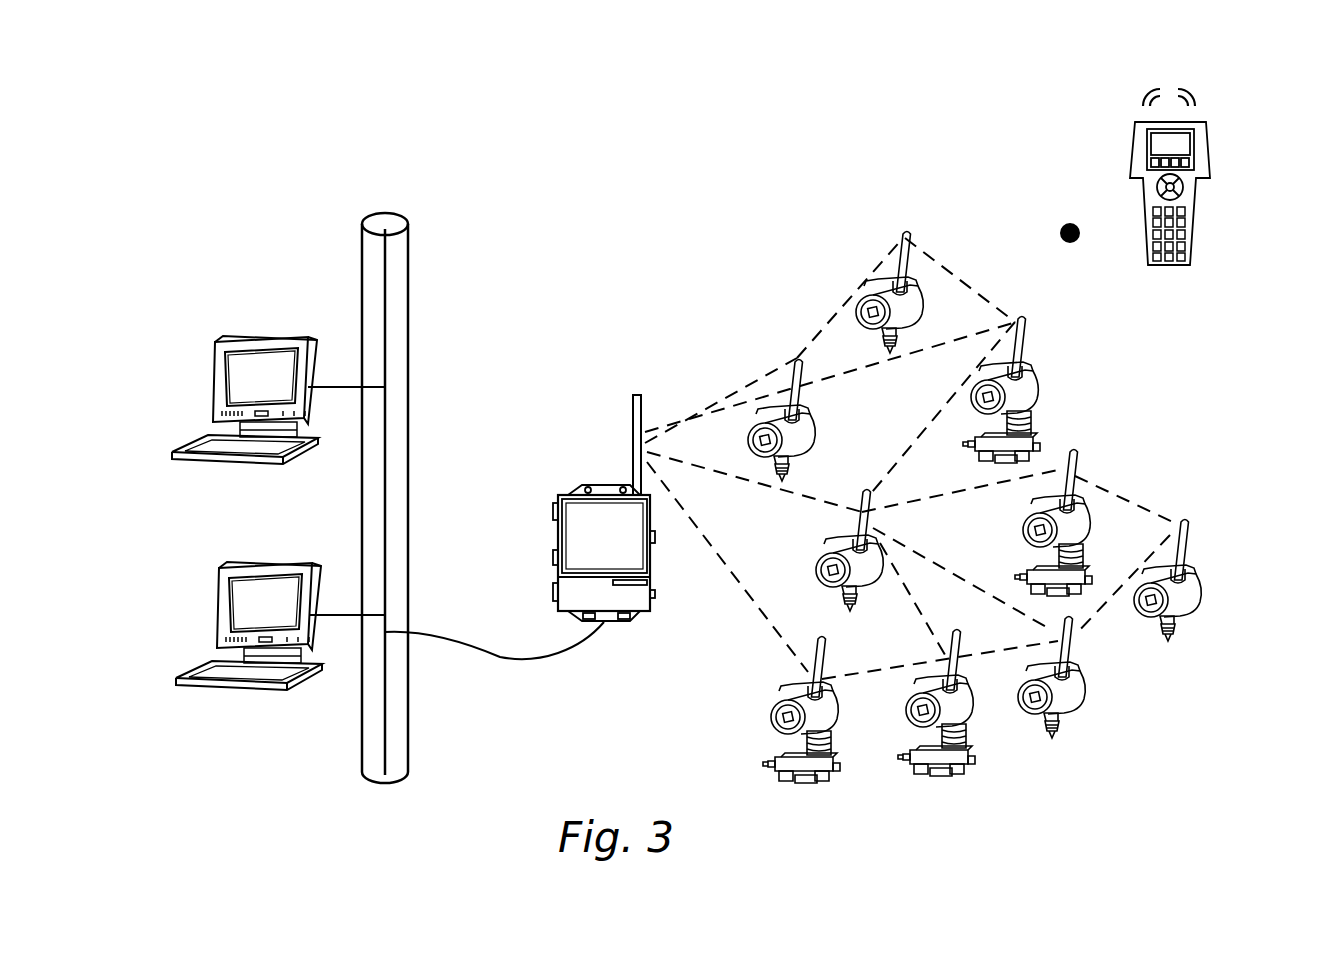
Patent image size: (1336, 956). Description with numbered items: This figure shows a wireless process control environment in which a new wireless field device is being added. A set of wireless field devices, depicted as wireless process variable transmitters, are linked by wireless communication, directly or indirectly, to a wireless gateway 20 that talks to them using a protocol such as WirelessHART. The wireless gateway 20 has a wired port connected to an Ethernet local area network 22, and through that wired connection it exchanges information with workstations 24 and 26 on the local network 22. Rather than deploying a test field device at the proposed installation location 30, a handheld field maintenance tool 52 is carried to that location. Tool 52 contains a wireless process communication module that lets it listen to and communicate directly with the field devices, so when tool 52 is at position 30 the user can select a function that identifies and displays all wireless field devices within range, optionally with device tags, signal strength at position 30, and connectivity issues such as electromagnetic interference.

The wireless gateway 20 is at (557, 535).
The local area network 22 is at (500, 658).
The workstation 24 is at (212, 377).
The workstation 26 is at (220, 593).
The proposed installation location 30 is at (1040, 233).
The handheld field maintenance tool 52 is at (1183, 186).